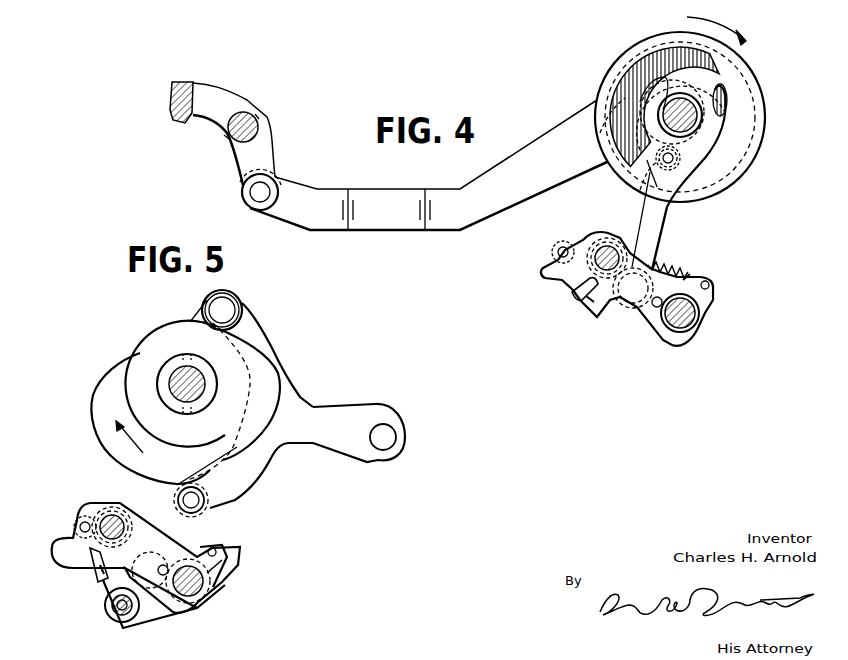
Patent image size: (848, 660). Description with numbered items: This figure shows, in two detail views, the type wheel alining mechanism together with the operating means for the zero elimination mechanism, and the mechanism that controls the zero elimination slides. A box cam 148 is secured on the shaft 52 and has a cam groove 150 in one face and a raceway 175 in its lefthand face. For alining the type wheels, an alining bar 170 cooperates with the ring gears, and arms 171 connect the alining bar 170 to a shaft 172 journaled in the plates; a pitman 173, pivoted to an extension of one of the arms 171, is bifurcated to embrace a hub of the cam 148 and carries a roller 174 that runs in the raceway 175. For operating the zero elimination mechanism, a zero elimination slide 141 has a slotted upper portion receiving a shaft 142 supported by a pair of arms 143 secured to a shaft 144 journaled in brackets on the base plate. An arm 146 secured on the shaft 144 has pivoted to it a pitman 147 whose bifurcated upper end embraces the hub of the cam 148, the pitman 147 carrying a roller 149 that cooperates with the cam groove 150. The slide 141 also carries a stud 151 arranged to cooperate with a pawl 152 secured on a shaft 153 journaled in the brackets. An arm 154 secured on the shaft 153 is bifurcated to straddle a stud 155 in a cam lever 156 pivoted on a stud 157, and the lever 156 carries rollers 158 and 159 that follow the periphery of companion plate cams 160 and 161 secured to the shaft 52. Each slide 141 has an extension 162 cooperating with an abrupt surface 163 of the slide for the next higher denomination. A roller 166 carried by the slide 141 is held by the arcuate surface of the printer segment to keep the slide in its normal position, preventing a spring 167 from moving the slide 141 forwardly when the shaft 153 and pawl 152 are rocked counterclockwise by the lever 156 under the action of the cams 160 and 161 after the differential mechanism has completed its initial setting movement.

In FIG. 4, the shaft 52 is at (700, 123).
In FIG. 5, the shaft 52 is at (173, 377).
In FIG. 4, the zero elimination slide 141 is at (587, 242).
In FIG. 5, the zero elimination slide 141 is at (140, 532).
In FIG. 4, the shaft 142 is at (598, 237).
In FIG. 5, the shaft 142 is at (112, 513).
In FIG. 4, the arms 143 is at (613, 308).
In FIG. 4, the shaft 144 is at (700, 327).
In FIG. 4, the arm 146 is at (668, 263).
In FIG. 4, the pitman 147 is at (658, 225).
In FIG. 4, the box cam 148 is at (762, 143).
In FIG. 4, the roller 149 is at (687, 173).
In FIG. 4, the cam groove 150 is at (620, 175).
In FIG. 5, the stud 151 is at (180, 550).
In FIG. 5, the pawl 152 is at (105, 591).
In FIG. 5, the shaft 153 is at (122, 614).
In FIG. 5, the arm 154 is at (152, 604).
In FIG. 5, the stud 155 is at (238, 552).
In FIG. 5, the cam lever 156 is at (275, 447).
In FIG. 5, the stud 157 is at (382, 423).
In FIG. 5, the roller 158 is at (209, 510).
In FIG. 5, the roller 159 is at (207, 298).
In FIG. 5, the plate cam 160 is at (100, 398).
In FIG. 5, the plate cam 161 is at (125, 362).
In FIG. 4, the extension 162 is at (580, 302).
In FIG. 4, the abrupt surface 163 is at (570, 290).
In FIG. 4, the roller 166 is at (556, 252).
In FIG. 5, the roller 166 is at (78, 513).
In FIG. 4, the spring 167 is at (683, 280).
In FIG. 4, the alining bar 170 is at (171, 96).
In FIG. 4, the arms 171 is at (214, 68).
In FIG. 4, the shaft 172 is at (247, 110).
In FIG. 4, the pitman 173 is at (397, 173).
In FIG. 4, the roller 174 is at (600, 133).
In FIG. 4, the raceway 175 is at (640, 190).